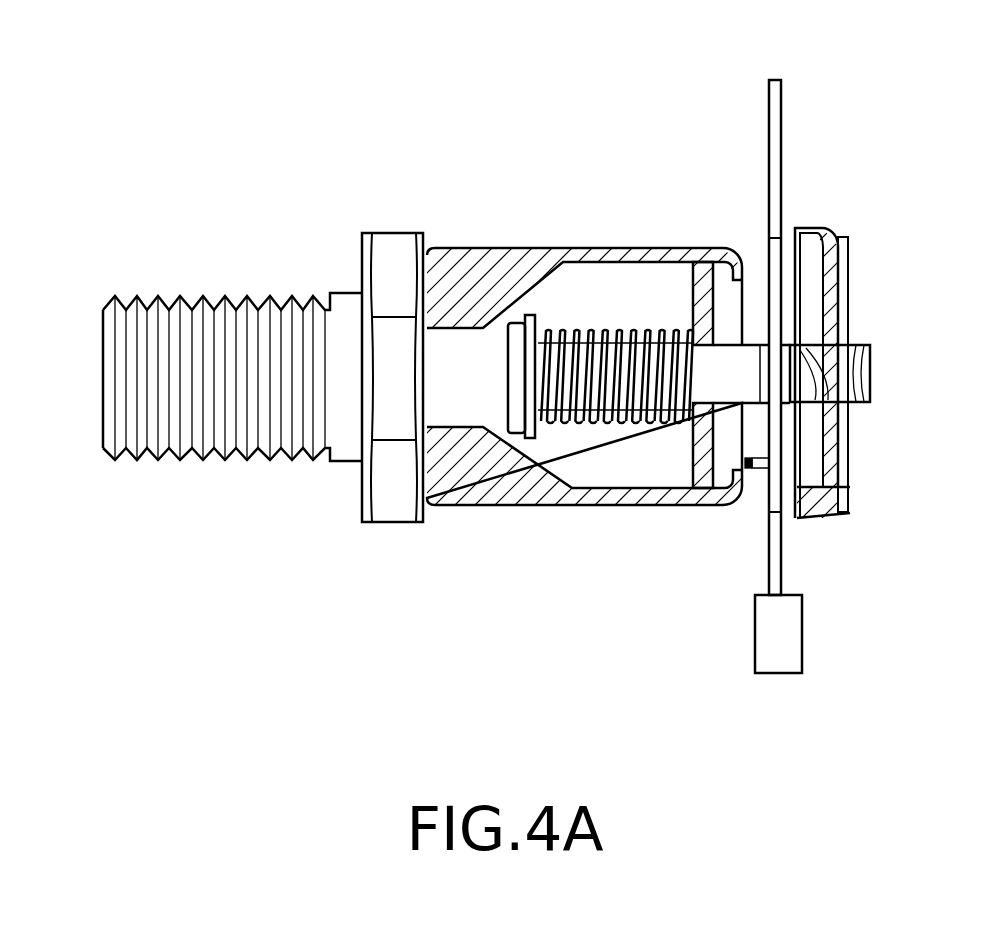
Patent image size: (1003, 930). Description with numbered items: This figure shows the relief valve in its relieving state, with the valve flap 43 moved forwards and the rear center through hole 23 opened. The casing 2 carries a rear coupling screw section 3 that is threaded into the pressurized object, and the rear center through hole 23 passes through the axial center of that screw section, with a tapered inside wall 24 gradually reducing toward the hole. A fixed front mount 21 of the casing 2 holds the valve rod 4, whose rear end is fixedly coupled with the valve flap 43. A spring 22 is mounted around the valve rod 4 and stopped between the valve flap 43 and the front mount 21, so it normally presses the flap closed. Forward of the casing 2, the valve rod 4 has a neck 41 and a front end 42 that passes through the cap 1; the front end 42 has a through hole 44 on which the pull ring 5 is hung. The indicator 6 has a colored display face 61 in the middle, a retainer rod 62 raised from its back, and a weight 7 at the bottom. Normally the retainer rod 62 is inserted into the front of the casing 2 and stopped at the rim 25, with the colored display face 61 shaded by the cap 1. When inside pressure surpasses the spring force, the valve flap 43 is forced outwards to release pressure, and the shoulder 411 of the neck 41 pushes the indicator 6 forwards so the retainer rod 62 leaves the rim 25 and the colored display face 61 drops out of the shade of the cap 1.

The cap 1 is at (815, 227).
The casing 2 is at (551, 399).
The rear coupling screw section 3 is at (320, 477).
The valve rod 4 is at (732, 258).
The pull ring 5 is at (848, 280).
The indicator 6 is at (862, 302).
The weight 7 is at (788, 648).
The fixed front mount 21 is at (705, 455).
The spring 22 is at (593, 423).
The rear center through hole 23 is at (448, 390).
The tapered inside wall 24 is at (530, 291).
The rim 25 is at (748, 470).
The neck 41 is at (843, 400).
The front end 42 is at (887, 375).
The valve flap 43 is at (507, 367).
The through hole 44 is at (790, 378).
The colored display face 61 is at (778, 473).
The retainer rod 62 is at (755, 473).
The shoulder 411 is at (769, 383).